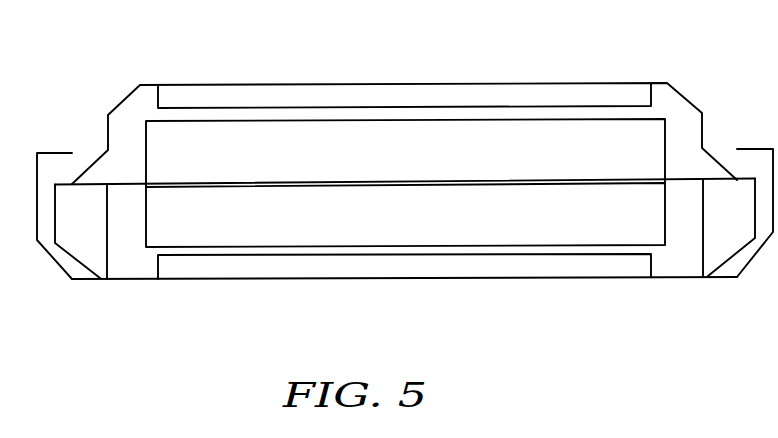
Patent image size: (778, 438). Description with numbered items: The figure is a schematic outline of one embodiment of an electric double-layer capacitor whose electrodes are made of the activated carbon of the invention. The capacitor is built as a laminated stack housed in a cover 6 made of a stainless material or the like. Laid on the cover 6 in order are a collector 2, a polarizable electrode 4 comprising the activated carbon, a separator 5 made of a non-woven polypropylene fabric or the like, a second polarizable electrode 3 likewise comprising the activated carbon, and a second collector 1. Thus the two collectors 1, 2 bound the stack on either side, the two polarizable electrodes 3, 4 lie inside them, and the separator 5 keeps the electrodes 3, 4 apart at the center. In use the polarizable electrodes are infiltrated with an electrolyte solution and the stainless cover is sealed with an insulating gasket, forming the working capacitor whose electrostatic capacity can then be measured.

The collector 1 is at (403, 84).
The collector 2 is at (470, 274).
The polarizable electrode 3 is at (643, 155).
The polarizable electrode 4 is at (643, 215).
The separator 5 is at (156, 187).
The cover 6 is at (55, 262).